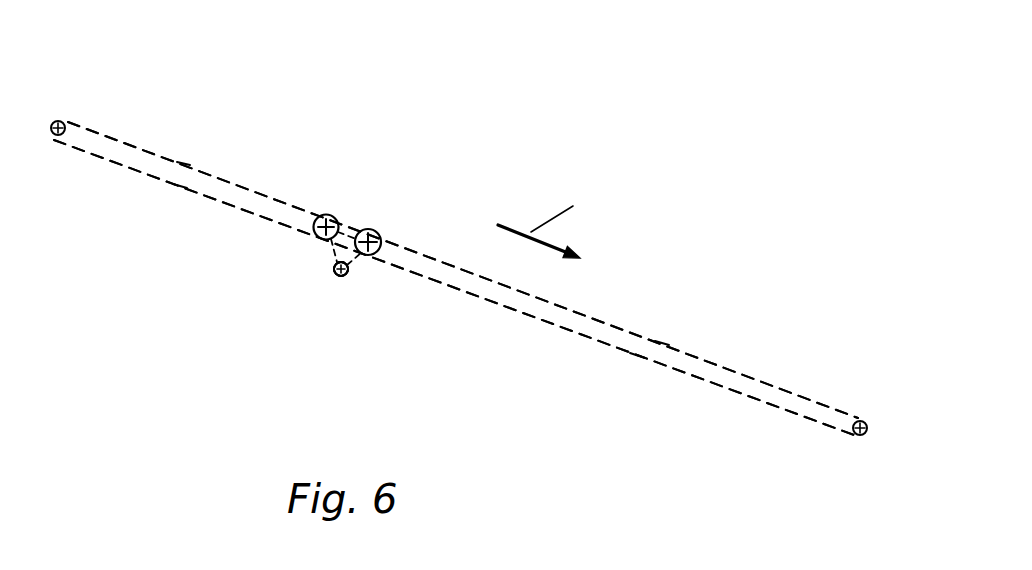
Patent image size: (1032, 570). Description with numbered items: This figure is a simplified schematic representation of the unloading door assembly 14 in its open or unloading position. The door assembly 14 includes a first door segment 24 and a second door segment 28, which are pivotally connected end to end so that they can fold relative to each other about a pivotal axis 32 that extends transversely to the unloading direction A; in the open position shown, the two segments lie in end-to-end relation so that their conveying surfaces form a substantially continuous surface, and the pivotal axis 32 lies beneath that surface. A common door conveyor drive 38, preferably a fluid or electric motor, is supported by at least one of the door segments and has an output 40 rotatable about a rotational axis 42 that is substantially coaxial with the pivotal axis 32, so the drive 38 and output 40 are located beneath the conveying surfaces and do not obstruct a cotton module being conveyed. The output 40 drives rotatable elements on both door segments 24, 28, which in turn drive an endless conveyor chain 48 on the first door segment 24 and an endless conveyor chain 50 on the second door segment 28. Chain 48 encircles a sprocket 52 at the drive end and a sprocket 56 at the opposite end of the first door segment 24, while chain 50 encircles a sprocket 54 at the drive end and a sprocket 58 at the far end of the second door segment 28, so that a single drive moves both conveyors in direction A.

The unloading door assembly 14 is at (622, 127).
The first door segment 24 is at (180, 187).
The second door segment 28 is at (638, 357).
The pivotal axis 32 is at (347, 276).
The common door conveyor drive 38 is at (325, 274).
The output 40 is at (347, 276).
The rotational axis 42 is at (347, 276).
The endless conveyor chain 48 is at (186, 163).
The endless conveyor chain 50 is at (662, 343).
The sprocket 52 is at (335, 215).
The sprocket 54 is at (372, 229).
The sprocket 56 is at (58, 119).
The sprocket 58 is at (863, 421).